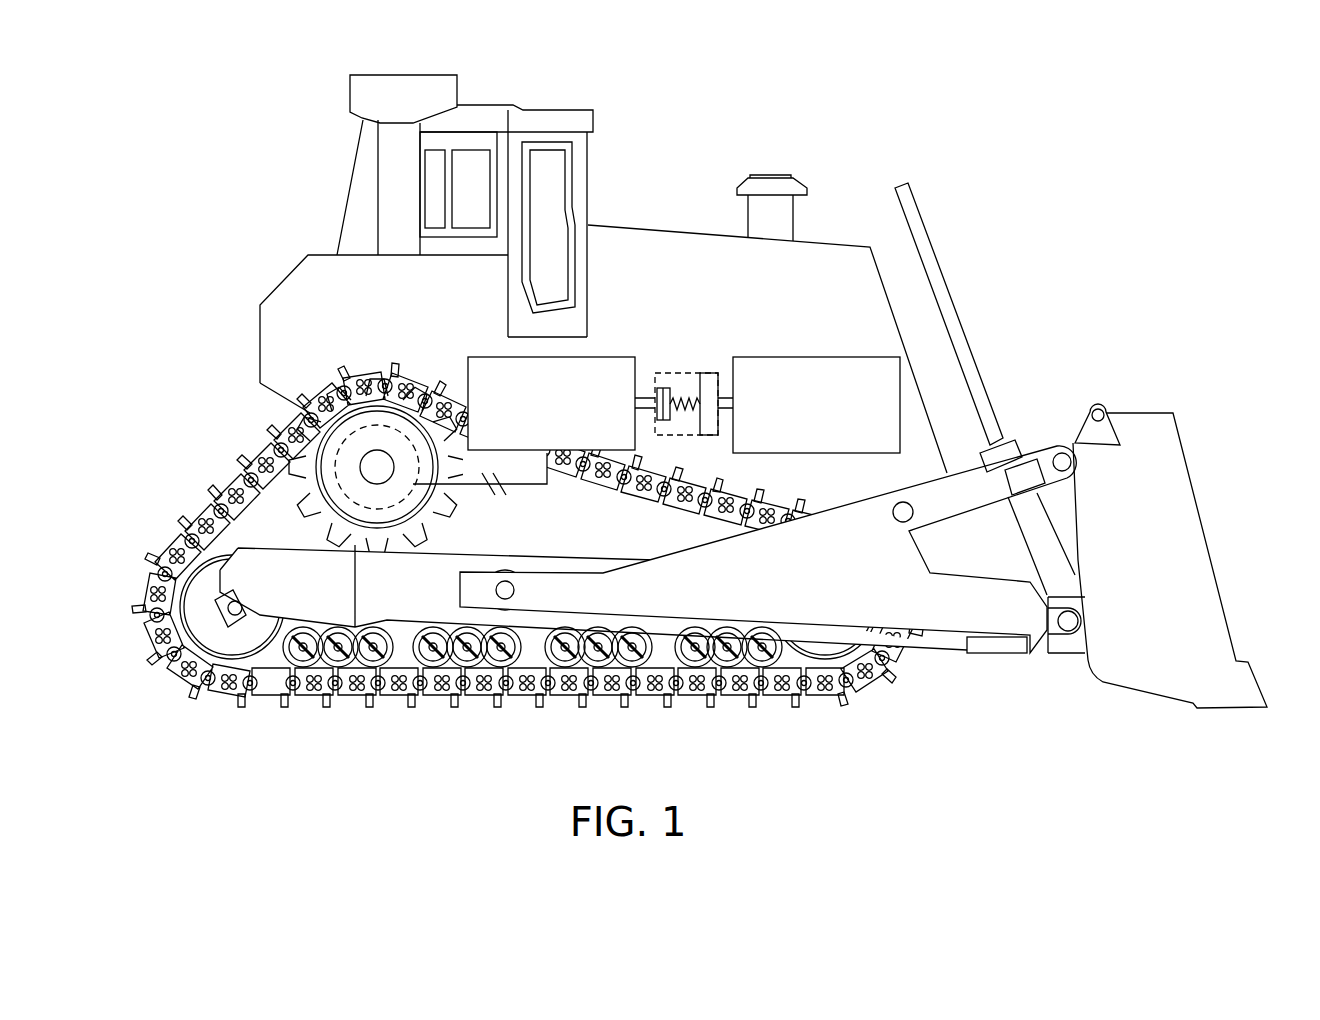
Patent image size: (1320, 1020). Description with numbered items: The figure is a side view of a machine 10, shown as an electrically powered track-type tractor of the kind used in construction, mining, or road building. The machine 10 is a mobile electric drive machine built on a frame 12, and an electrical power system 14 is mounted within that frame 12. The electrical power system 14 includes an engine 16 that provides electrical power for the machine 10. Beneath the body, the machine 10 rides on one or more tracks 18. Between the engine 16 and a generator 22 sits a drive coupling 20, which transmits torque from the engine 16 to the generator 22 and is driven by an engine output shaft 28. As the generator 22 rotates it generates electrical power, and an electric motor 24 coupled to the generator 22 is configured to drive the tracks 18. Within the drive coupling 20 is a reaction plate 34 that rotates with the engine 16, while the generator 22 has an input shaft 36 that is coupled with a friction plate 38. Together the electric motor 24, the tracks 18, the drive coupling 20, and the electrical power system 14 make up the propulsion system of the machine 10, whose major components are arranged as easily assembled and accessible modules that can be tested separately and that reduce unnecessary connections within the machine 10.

The machine 10 is at (1029, 297).
The frame 12 is at (283, 279).
The electrical power system 14 is at (705, 420).
The engine 16 is at (815, 356).
The tracks 18 is at (506, 535).
The drive coupling 20 is at (672, 428).
The generator 22 is at (491, 355).
The electric motor 24 is at (307, 483).
The engine output shaft 28 is at (723, 398).
The reaction plate 34 is at (672, 388).
The input shaft 36 is at (647, 418).
The friction plate 38 is at (657, 388).